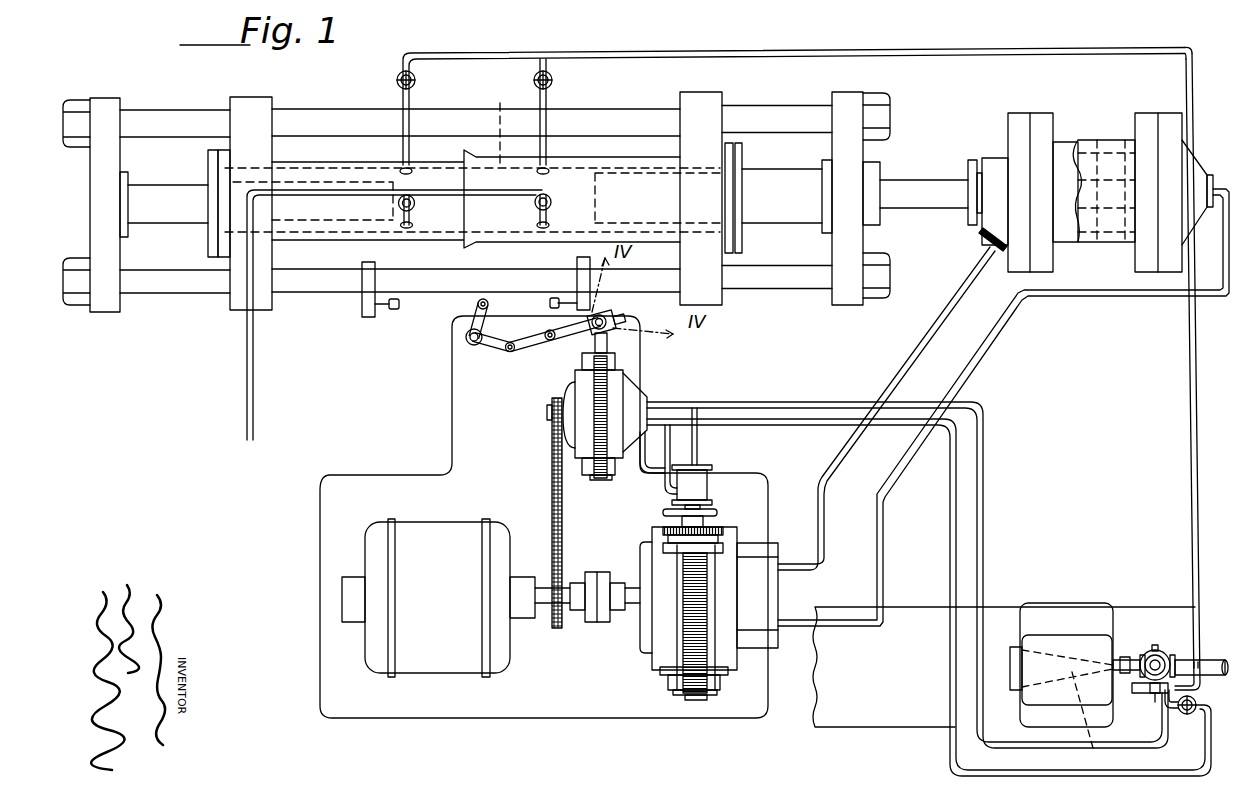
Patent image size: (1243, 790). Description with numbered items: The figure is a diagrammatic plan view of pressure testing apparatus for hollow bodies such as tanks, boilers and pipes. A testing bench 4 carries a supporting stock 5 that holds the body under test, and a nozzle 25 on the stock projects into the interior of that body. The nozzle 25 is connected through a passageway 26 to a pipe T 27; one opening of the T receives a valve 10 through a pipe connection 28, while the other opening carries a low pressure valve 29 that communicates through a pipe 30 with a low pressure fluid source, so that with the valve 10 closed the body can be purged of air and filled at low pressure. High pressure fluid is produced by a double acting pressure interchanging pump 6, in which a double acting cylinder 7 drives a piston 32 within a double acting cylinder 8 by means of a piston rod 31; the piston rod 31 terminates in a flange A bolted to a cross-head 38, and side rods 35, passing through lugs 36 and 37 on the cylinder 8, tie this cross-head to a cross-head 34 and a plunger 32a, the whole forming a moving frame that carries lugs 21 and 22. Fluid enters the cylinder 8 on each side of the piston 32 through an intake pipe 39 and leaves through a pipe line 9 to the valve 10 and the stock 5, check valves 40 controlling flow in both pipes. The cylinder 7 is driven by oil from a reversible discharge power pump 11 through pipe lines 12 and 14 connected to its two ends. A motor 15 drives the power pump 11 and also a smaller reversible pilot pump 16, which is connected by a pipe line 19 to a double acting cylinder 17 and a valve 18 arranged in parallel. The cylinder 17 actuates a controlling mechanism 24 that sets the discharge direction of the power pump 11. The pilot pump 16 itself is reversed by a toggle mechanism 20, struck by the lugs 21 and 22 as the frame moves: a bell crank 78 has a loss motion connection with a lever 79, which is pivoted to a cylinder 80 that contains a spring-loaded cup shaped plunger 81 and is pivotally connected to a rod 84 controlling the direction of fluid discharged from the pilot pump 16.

The testing bench 4 is at (1004, 667).
The supporting stock 5 is at (1077, 635).
The pressure interchanging pump 6 is at (948, 114).
The double acting cylinder 7 is at (1090, 140).
The double acting cylinder 8 is at (475, 160).
The pipe line 9 is at (1193, 398).
The valve 10 is at (1155, 703).
The reversible discharge power pump 11 is at (740, 600).
The pipe line 12 is at (985, 355).
The pipe line 14 is at (925, 327).
The motor 15 is at (491, 598).
The reversible pilot pump 16 is at (620, 410).
The double acting cylinder 17 is at (700, 482).
The valve 18 is at (1187, 715).
The pipe line 19 is at (815, 412).
The toggle mechanism 20 is at (528, 338).
The lug 21 is at (370, 316).
The lug 22 is at (580, 275).
The controlling mechanism 24 is at (705, 575).
The nozzle 25 is at (1003, 655).
The passageway 26 is at (1090, 748).
The pipe T 27 is at (1126, 658).
The pipe connection 28 is at (1140, 694).
The low pressure valve 29 is at (1157, 648).
The pipe 30 is at (1210, 658).
The piston rod 31 is at (915, 182).
The piston 32 is at (778, 164).
The plunger 32a is at (154, 216).
The cross-head 34 is at (113, 156).
The side rods 35 is at (168, 113).
The lug 36 is at (258, 97).
The lug 37 is at (712, 100).
The cross-head 38 is at (870, 237).
The intake pipe 39 is at (332, 196).
The check valves 40 is at (533, 80).
The bell crank 78 is at (478, 310).
The lever 79 is at (535, 350).
The cylinder 80 is at (603, 315).
The cup shaped plunger 81 is at (612, 318).
The rod 84 is at (607, 340).
The flange A is at (872, 176).